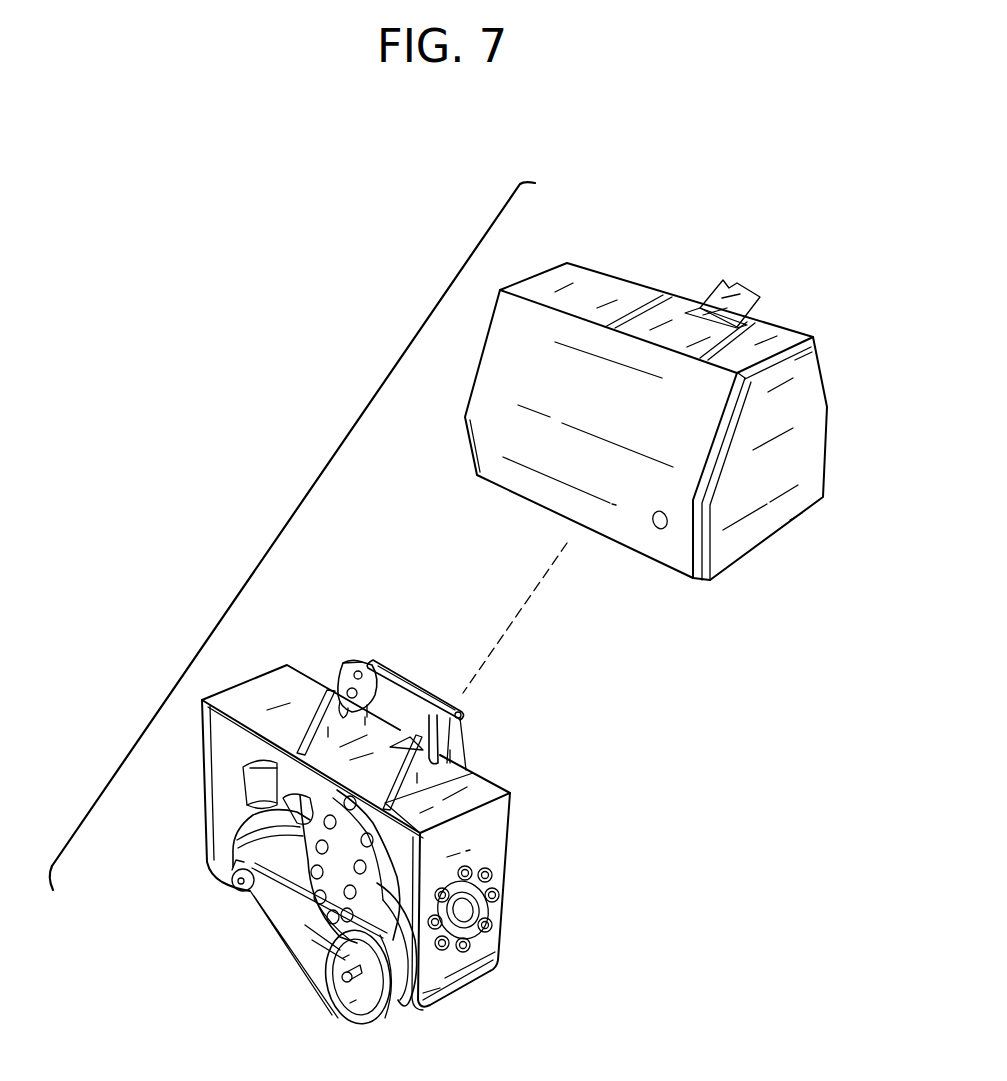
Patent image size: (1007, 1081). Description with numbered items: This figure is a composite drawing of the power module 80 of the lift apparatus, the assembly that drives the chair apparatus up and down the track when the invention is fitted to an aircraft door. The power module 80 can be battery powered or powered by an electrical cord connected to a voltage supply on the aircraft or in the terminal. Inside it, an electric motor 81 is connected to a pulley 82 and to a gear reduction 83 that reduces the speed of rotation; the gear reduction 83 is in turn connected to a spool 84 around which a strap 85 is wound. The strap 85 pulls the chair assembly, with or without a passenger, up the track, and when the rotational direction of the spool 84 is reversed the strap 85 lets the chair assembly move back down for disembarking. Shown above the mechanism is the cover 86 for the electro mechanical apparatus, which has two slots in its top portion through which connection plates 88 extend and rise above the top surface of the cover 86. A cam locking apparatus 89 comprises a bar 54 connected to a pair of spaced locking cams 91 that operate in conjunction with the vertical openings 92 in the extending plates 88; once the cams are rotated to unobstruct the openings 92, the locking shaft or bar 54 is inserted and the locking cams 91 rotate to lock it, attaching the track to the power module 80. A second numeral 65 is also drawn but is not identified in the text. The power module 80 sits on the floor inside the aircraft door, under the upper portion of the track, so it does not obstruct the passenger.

The bar 54 is at (424, 692).
The tab / belt 65 is at (735, 290).
The power module 80 is at (630, 782).
The electric motor 81 is at (253, 833).
The pulley 82 is at (245, 898).
The gear reduction 83 is at (440, 987).
The spool 84 is at (205, 855).
The strap 85 is at (810, 440).
The cover 86 is at (625, 317).
The connection plates 88 is at (468, 755).
The cam locking apparatus 89 is at (357, 658).
The locking cams 91 is at (340, 672).
The vertical openings 92 is at (452, 738).